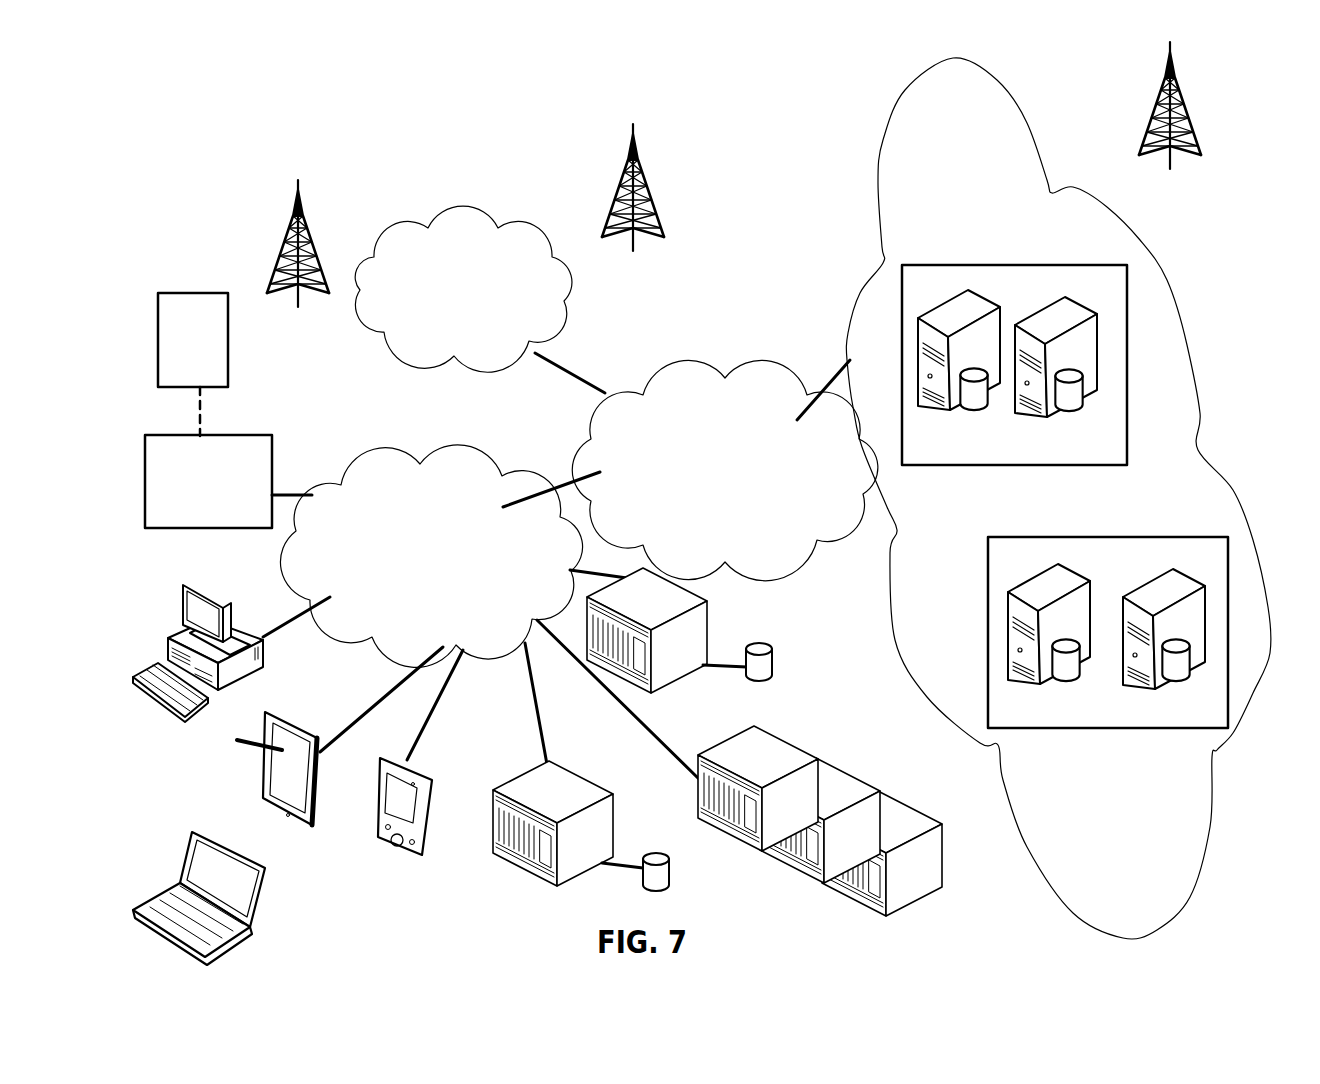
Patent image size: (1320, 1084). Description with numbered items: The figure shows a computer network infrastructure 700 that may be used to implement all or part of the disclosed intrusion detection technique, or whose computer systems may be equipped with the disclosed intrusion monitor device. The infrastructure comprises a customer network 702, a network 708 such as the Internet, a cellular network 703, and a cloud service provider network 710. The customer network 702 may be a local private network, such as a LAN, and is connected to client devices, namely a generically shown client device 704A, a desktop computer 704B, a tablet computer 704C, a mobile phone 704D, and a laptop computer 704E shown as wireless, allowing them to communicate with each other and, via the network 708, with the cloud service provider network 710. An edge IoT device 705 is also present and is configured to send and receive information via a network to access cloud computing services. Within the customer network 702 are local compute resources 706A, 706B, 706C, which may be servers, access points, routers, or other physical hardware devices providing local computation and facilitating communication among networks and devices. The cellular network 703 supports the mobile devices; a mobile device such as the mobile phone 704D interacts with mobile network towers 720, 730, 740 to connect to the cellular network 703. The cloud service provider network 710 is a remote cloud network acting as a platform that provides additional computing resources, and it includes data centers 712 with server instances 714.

The computer network infrastructure 700 is at (383, 155).
The customer network 702 is at (431, 551).
The cellular network 703 is at (463, 289).
The client device 704A is at (236, 466).
The desktop computer 704B is at (209, 636).
The tablet computer 704C is at (310, 750).
The mobile phone 704D is at (448, 795).
The laptop computer 704E is at (239, 898).
The edge IoT device 705 is at (200, 307).
The local compute resource 706A is at (581, 814).
The local compute resource 706B is at (691, 630).
The local compute resource 706C is at (820, 800).
The network 708 is at (725, 453).
The cloud service provider network 710 is at (1058, 498).
The data center 712 is at (1065, 473).
The server instance 714 is at (1065, 509).
The mobile network tower 720 is at (633, 207).
The mobile network tower 730 is at (298, 262).
The mobile network tower 740 is at (1170, 124).